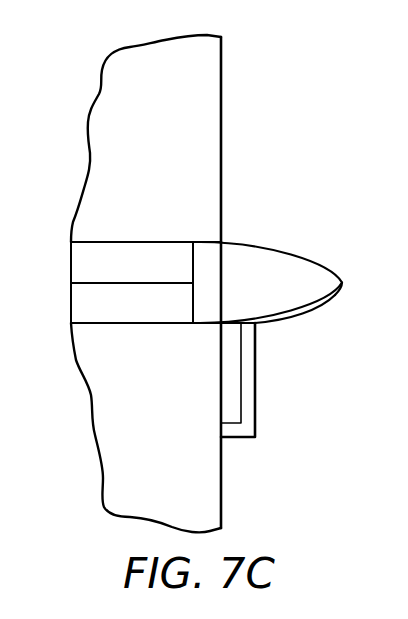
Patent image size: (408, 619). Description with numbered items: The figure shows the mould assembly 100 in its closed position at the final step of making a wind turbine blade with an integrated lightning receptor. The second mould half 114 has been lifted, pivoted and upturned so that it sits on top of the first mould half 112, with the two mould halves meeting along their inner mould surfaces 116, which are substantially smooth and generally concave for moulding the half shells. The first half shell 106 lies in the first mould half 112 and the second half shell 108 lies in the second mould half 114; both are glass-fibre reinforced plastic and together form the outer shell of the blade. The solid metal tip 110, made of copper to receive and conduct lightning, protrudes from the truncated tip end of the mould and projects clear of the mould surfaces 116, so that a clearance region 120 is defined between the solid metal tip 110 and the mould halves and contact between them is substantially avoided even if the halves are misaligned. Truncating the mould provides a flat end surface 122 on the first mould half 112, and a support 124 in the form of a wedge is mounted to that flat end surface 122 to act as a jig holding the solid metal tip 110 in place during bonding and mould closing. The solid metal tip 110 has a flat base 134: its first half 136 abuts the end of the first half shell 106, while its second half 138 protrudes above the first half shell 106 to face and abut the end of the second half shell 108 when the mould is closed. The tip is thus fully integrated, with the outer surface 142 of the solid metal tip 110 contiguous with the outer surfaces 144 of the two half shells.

The mould assembly 100 is at (281, 89).
The first half shell 106 is at (75, 303).
The second half shell 108 is at (75, 257).
The solid metal tip 110 is at (277, 262).
The first mould half 112 is at (177, 461).
The second mould half 114 is at (177, 127).
The inner mould surface 116 is at (161, 240).
The clearance region 120 is at (335, 311).
The flat end surface 122 is at (222, 492).
The support 124 is at (256, 395).
The flat base 134 is at (193, 290).
The first half of the flat base 136 is at (193, 313).
The second half of the flat base 138 is at (193, 265).
The outer surface of the solid metal tip 142 is at (293, 318).
The outer surfaces of the half shells 144 is at (107, 240).